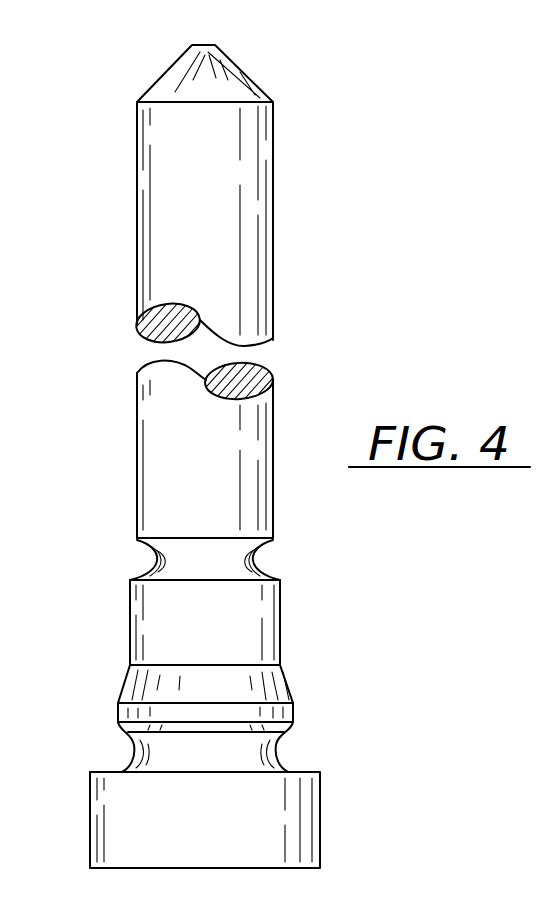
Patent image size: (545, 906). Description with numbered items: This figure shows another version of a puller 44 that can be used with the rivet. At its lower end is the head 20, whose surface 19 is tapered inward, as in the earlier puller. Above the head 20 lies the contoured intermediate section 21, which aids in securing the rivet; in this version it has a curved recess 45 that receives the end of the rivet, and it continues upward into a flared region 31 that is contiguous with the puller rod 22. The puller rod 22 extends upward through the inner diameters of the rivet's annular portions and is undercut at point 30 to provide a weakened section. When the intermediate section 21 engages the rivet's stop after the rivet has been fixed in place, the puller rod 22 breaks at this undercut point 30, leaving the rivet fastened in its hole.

The puller rod 22 is at (258, 235).
The undercut point 30 is at (250, 557).
The puller 44 is at (130, 635).
The flared region 31 is at (270, 687).
The intermediate section 21 is at (125, 711).
The curved recess 45 is at (273, 753).
The head 20 is at (288, 815).
The surface 19 is at (112, 772).